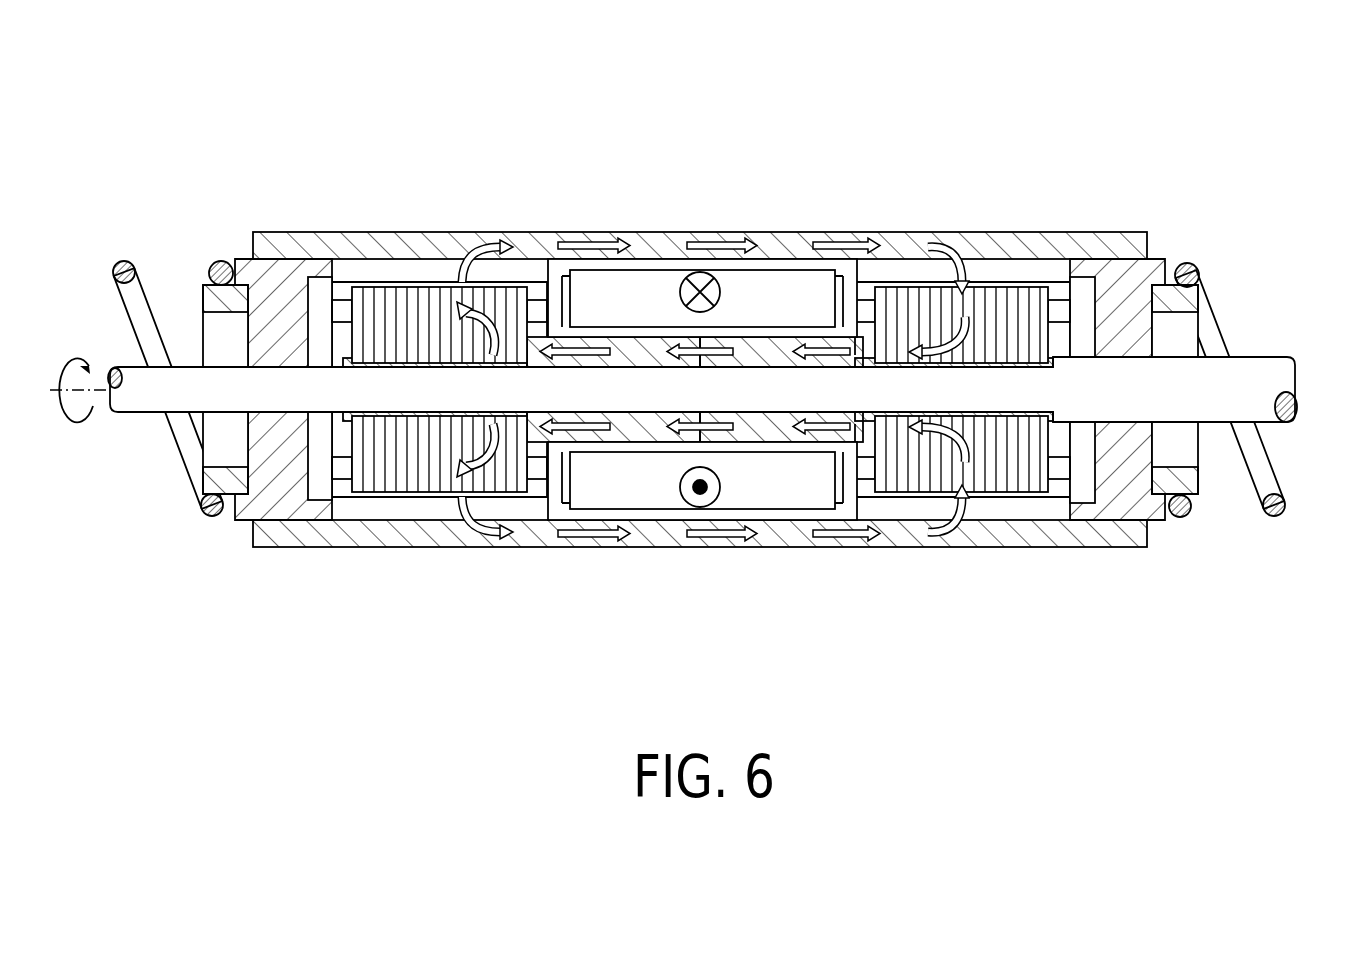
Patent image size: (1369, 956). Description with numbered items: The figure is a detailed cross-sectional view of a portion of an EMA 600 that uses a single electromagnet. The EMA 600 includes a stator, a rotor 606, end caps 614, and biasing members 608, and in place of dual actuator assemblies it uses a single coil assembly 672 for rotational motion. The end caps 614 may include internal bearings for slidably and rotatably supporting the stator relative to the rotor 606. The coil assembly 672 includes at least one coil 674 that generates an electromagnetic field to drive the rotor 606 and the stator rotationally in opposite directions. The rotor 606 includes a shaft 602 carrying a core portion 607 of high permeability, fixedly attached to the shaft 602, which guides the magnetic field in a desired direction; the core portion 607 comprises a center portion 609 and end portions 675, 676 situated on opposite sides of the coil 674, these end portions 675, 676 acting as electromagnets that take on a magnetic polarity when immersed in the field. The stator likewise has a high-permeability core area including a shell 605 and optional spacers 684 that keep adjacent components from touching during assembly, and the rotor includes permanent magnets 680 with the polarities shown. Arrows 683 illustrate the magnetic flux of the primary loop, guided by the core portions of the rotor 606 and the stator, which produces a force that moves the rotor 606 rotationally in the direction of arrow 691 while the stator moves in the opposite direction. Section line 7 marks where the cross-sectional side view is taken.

The EMA 600 is at (199, 96).
The shaft 602 is at (1275, 424).
The shell 605 is at (773, 246).
The rotor 606 is at (1258, 368).
The core portion 607 is at (645, 432).
The biasing members 608 is at (124, 260).
The center portion 609 is at (778, 432).
The end caps 614 is at (247, 256).
The coil assembly 672 is at (593, 204).
The coil 674 is at (640, 270).
The end portion 675 is at (435, 486).
The end portion 676 is at (915, 486).
The magnets 680 is at (343, 300).
The arrows 683 is at (713, 246).
The spacers 684 is at (385, 268).
The arrow 691 is at (76, 424).
The section line 7- 7 is at (985, 218).